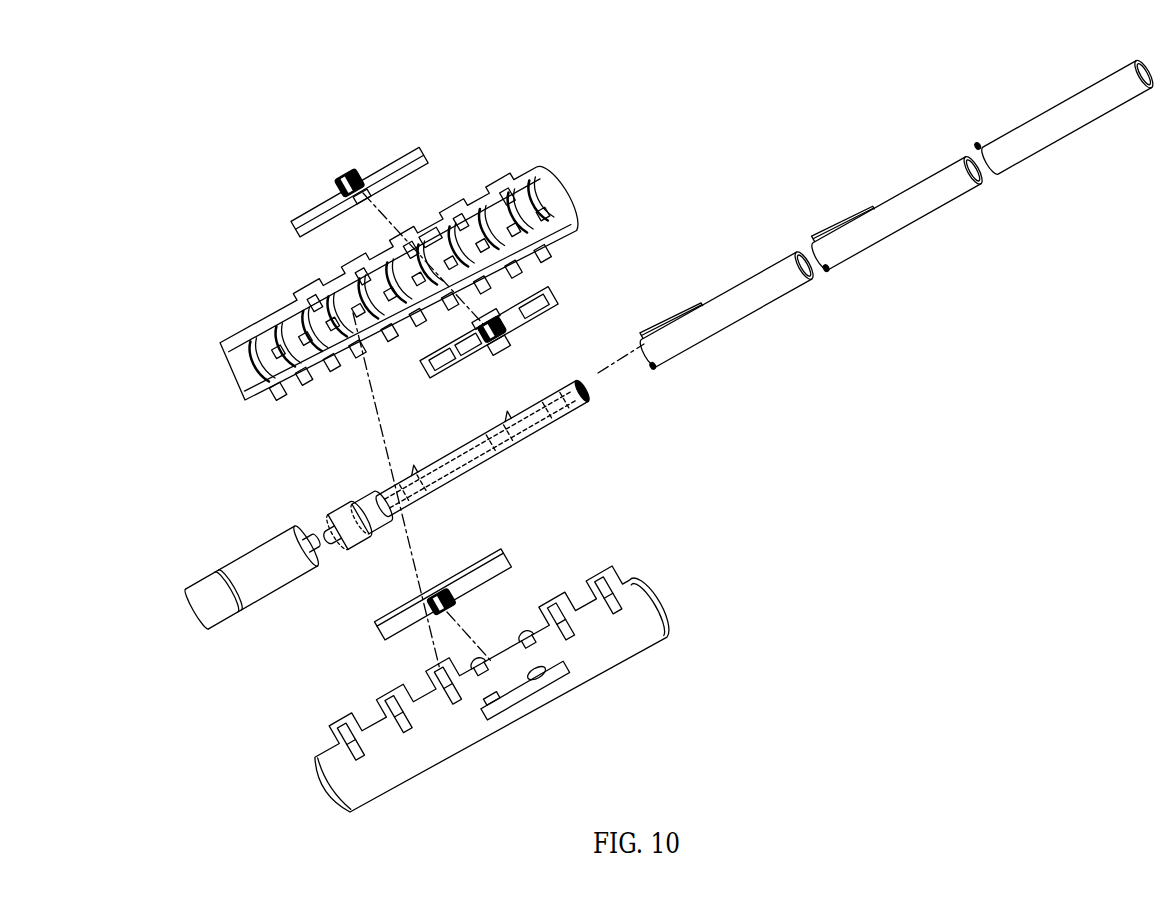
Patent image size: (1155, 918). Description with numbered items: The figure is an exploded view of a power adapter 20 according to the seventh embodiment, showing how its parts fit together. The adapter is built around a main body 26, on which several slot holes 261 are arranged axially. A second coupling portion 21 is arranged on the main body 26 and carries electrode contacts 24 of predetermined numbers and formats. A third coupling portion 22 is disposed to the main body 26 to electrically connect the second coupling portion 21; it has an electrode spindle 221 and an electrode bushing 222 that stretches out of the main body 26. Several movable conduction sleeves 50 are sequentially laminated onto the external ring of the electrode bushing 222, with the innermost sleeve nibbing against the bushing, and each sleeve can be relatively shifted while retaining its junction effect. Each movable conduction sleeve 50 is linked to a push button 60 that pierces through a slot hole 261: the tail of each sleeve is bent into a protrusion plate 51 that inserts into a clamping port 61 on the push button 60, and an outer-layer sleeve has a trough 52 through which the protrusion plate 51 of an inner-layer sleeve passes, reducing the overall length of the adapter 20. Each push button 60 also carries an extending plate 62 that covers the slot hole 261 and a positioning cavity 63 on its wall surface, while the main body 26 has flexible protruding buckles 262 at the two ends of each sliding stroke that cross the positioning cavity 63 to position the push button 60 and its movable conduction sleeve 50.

The power adapter 20 is at (467, 487).
The second coupling portion 21 is at (187, 612).
The third coupling portion 22 is at (482, 447).
The electrode spindle 221 is at (520, 440).
The electrode bushing 222 is at (588, 402).
The electrode contacts 24 is at (280, 550).
The main body 26 is at (632, 612).
The slot hole 261 is at (560, 697).
The flexible protruding buckle 262 is at (482, 673).
The movable conduction sleeve 50 is at (1057, 127).
The protrusion plate 51 is at (978, 147).
The trough 52 is at (680, 317).
The push button 60 is at (452, 604).
The clamping port 61 is at (483, 326).
The extending plate 62 is at (387, 625).
The positioning cavity 63 is at (500, 347).